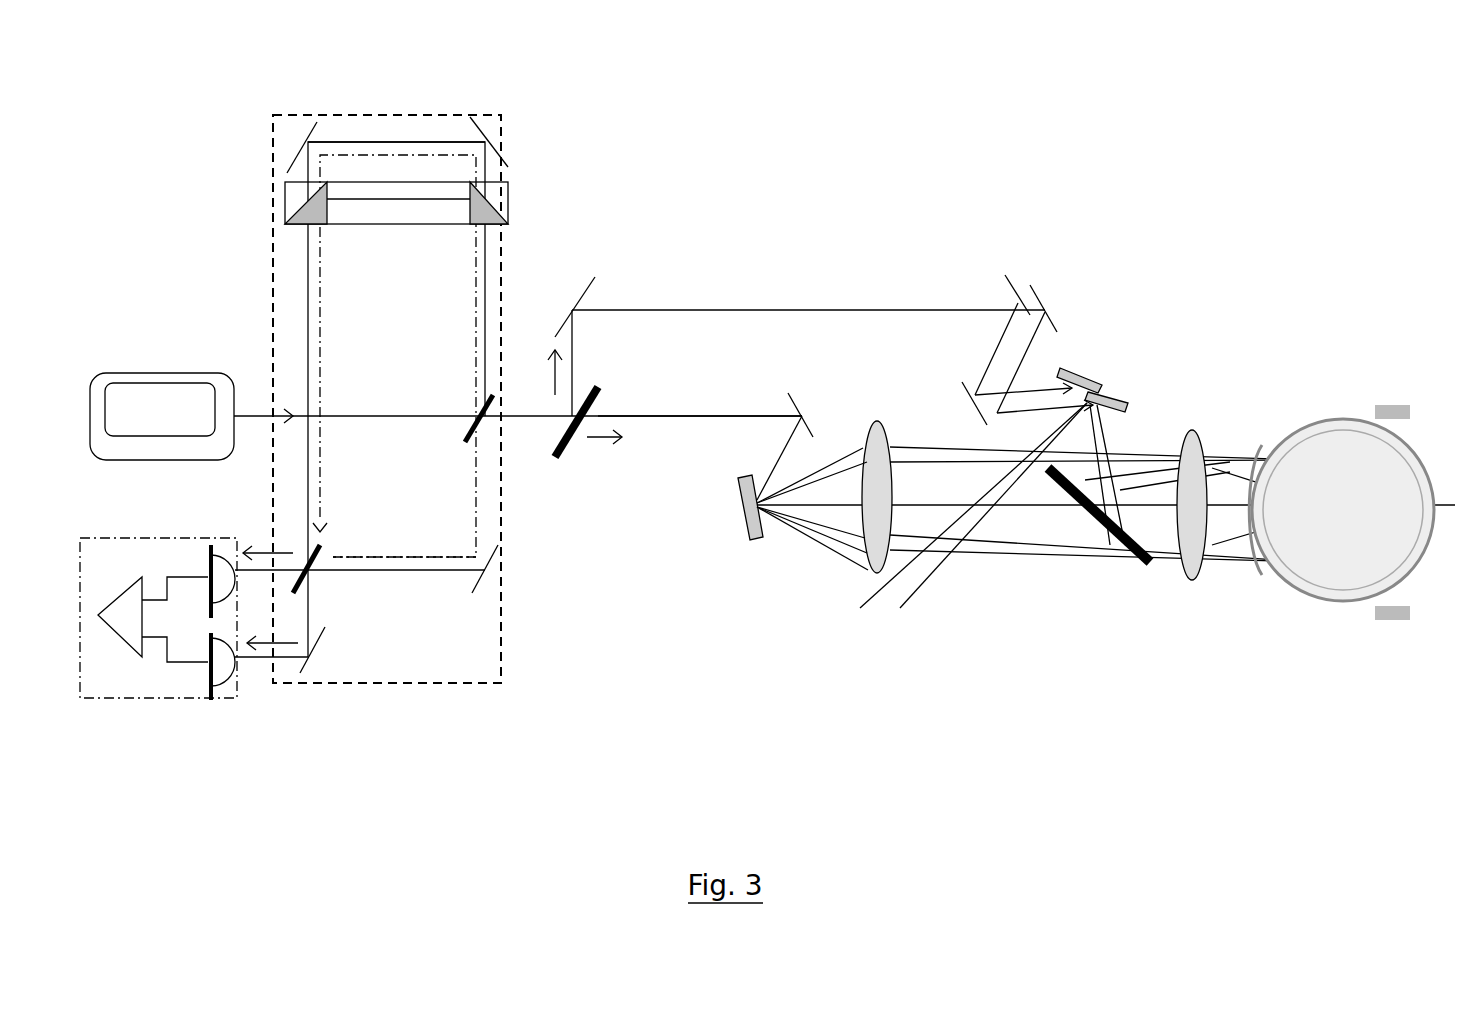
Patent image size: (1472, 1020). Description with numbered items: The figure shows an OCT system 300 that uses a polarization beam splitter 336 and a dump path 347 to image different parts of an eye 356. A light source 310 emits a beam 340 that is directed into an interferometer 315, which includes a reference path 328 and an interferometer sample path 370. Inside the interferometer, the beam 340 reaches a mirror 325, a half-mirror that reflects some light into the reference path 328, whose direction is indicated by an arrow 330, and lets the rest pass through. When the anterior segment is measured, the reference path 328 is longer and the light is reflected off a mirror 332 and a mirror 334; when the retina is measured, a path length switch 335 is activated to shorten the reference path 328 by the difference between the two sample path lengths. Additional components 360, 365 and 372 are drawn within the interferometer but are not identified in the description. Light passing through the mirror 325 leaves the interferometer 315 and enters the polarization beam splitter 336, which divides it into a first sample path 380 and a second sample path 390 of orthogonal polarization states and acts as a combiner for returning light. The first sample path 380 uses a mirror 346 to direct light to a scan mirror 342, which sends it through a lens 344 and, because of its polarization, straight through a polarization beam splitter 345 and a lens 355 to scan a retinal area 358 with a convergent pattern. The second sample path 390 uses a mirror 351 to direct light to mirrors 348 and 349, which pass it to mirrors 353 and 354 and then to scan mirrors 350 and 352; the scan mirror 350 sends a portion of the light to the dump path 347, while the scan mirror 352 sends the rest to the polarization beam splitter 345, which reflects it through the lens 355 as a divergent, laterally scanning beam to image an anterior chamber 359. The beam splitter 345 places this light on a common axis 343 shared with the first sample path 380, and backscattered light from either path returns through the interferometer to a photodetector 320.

The OCT system 300 is at (873, 770).
The light source 310 is at (140, 423).
The interferometer 315 is at (440, 675).
The photodetector 320 is at (98, 688).
The mirror 325 is at (485, 397).
The reference path 328 is at (358, 140).
The arrow 330 is at (417, 154).
The mirror 332 is at (490, 137).
The mirror 334 is at (297, 147).
The path length switch 335 is at (285, 202).
The polarization beam splitter 336 is at (577, 427).
The beam 340 is at (390, 418).
The scan mirror 342 is at (755, 542).
The common axis 343 is at (1238, 507).
The lens 344 is at (867, 573).
The polarization beam splitter 345 is at (1107, 520).
The mirror 346 is at (800, 413).
The dump path 347 is at (887, 607).
The mirror 348 is at (1018, 300).
The mirror 349 is at (1045, 310).
The scan mirror 350 is at (1082, 370).
The mirror 351 is at (590, 292).
The scan mirror 352 is at (1110, 390).
The mirror 353 is at (973, 397).
The mirror 354 is at (997, 417).
The lens 355 is at (1192, 582).
The eye 356 is at (1378, 593).
The retinal area 358 is at (1395, 487).
The anterior chamber 359 is at (1302, 460).
The sample beam path 360 is at (425, 558).
The mirror 365 is at (486, 561).
The interferometer sample path 370 is at (358, 572).
The beam splitter 372 is at (320, 575).
The first sample path 380 is at (655, 420).
The second sample path 390 is at (725, 310).